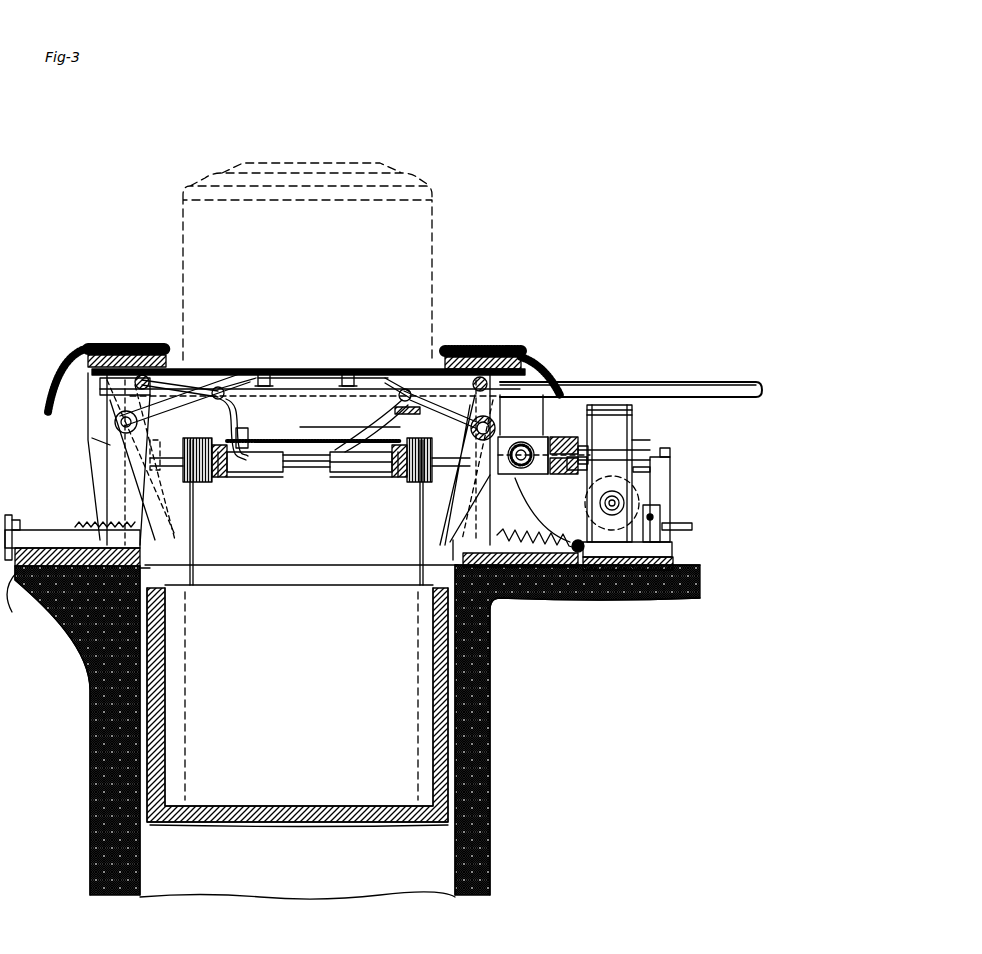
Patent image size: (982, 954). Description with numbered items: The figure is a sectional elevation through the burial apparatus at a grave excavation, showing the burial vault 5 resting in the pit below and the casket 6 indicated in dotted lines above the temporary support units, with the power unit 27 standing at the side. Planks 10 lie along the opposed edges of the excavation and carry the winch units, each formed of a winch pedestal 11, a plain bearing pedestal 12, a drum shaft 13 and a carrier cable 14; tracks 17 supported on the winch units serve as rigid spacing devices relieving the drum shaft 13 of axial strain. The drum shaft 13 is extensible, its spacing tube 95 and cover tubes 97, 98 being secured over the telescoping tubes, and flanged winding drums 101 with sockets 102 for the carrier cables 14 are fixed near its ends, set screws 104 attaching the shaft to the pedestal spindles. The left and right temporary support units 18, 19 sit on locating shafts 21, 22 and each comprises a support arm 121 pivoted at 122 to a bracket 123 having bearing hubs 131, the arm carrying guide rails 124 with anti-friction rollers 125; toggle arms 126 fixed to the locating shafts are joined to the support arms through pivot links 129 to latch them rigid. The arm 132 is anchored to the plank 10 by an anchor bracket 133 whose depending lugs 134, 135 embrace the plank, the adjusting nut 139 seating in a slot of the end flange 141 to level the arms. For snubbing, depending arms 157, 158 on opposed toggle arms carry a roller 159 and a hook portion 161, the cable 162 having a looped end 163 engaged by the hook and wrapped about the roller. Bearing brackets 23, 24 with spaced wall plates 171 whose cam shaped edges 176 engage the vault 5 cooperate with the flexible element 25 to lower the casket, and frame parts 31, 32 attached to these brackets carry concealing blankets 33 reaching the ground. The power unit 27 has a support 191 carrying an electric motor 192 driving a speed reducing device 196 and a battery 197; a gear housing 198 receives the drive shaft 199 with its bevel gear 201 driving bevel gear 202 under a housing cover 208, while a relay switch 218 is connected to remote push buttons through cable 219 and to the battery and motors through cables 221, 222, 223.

The burial vault 5 is at (301, 693).
The casket 6 is at (432, 222).
The planks 10 is at (572, 540).
The winch pedestal 11 is at (540, 490).
The plain bearing pedestal 12 is at (100, 468).
The drum shaft 13 is at (300, 472).
The carrier cables 14 is at (190, 548).
The tracks 17 is at (610, 392).
The left temporary support unit 18 is at (222, 362).
The right temporary support unit 19 is at (394, 410).
The locating shaft 21 is at (115, 420).
The locating shaft 22 is at (478, 418).
The bearing bracket 23 is at (90, 438).
The bearing bracket 24 is at (492, 518).
The flexible element 25 is at (268, 829).
The power unit 27 is at (640, 440).
The frame part 31 is at (100, 345).
The frame part 32 is at (510, 348).
The concealing blankets 33 is at (55, 378).
The spacing tube 95 is at (312, 470).
The cover tube 97 is at (345, 478).
The cover tube 98 is at (222, 478).
The flanged winding drums 101 is at (212, 482).
The sockets 102 is at (309, 462).
The set screws 104 is at (185, 480).
The support arm 121 is at (210, 372).
The pivot 122 is at (145, 375).
The bracket 123 is at (108, 390).
The guide rails 124 is at (264, 372).
The anti-friction rollers 125 is at (310, 366).
The toggle arm 126 is at (170, 395).
The pivot links 129 is at (226, 397).
The bearing hubs 131 is at (155, 440).
The arm 132 is at (488, 458).
The anchor bracket 133 is at (36, 518).
The lug 134 is at (148, 560).
The lug 135 is at (20, 600).
The adjusting nut 139 is at (14, 512).
The end flange 141 is at (24, 520).
The depending arm 157 is at (250, 420).
The depending arm 158 is at (408, 427).
The roller 159 is at (262, 430).
The hook portion 161 is at (418, 450).
The cable 162 is at (304, 430).
The looped end 163 is at (361, 460).
The wall plates 171 is at (100, 456).
The cam edges 176 is at (182, 438).
The support 191 is at (673, 562).
The electric motor 192 is at (624, 500).
The speed reducing device 196 is at (628, 425).
The battery 197 is at (670, 470).
The gear housing 198 is at (580, 466).
The drive shaft 199 is at (580, 444).
The bevel gear 201 is at (556, 475).
The bevel gear 202 is at (530, 478).
The housing cover 208 is at (560, 435).
The relay switch 218 is at (660, 515).
The cable 219 is at (692, 527).
The cable 221 is at (670, 452).
The cable 222 is at (650, 469).
The cable 223 is at (653, 515).